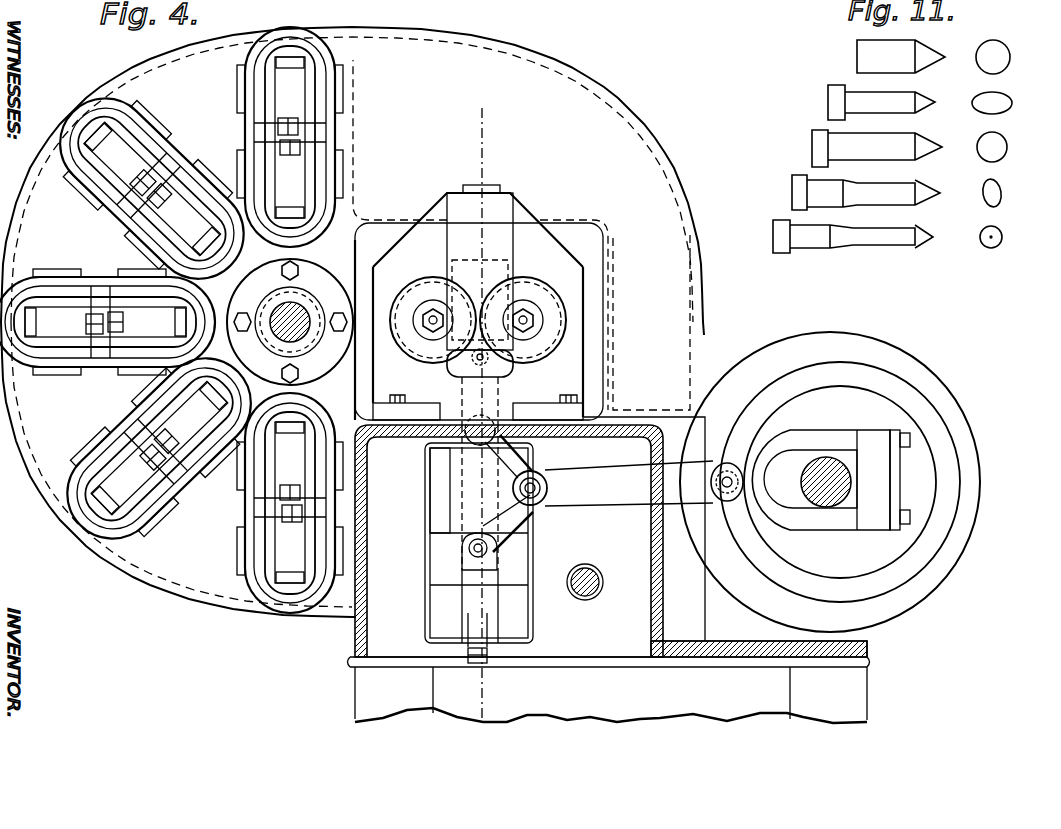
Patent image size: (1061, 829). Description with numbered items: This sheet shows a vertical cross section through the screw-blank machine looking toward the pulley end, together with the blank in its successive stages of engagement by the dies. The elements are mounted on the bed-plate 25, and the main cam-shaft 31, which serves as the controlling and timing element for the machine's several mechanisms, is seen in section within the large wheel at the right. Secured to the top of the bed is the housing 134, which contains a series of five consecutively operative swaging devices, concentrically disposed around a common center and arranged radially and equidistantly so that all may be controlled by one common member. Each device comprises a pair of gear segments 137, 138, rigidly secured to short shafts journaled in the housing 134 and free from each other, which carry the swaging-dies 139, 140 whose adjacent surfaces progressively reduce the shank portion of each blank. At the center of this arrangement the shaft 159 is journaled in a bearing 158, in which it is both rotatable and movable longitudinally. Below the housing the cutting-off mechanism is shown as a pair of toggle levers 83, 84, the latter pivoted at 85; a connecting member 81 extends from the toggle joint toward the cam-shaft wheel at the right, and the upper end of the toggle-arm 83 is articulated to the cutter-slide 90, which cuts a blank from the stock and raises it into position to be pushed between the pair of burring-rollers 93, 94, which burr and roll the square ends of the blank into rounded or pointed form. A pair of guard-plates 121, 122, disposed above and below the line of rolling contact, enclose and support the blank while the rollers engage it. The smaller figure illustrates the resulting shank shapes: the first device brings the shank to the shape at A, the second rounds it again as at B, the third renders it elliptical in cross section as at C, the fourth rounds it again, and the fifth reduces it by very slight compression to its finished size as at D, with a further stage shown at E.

In FIG. 4, the housing 134 is at (456, 46).
In FIG. 4, the gear segment 137 is at (124, 147).
In FIG. 4, the gear segment 138 is at (186, 228).
In FIG. 4, the swaging-die 139 is at (157, 172).
In FIG. 4, the swaging-die 140 is at (170, 197).
In FIG. 4, the shaft 159 is at (298, 305).
In FIG. 4, the bearing 158 is at (318, 342).
In FIG. 4, the cutter-slide 90 is at (492, 187).
In FIG. 4, the roller 94 is at (430, 283).
In FIG. 4, the roller 93 is at (550, 311).
In FIG. 4, the guard-plate 121 is at (487, 340).
In FIG. 4, the guard-plate 122 is at (487, 368).
In FIG. 4, the toggle lever 83 is at (527, 465).
In FIG. 4, the connecting rod 81 is at (607, 480).
In FIG. 4, the toggle lever 84 is at (519, 512).
In FIG. 4, the pivot 85 is at (488, 548).
In FIG. 4, the main cam-shaft 31 is at (829, 462).
In FIG. 4, the bed-plate 25 is at (870, 651).
In FIG. 11, the blank shank shape A is at (1006, 57).
In FIG. 11, the blank B is at (1004, 104).
In FIG. 11, the blank shank shape C is at (1006, 147).
In FIG. 11, the blank shank shape D is at (1007, 193).
In FIG. 11, the small round pin cross-section E is at (1006, 238).